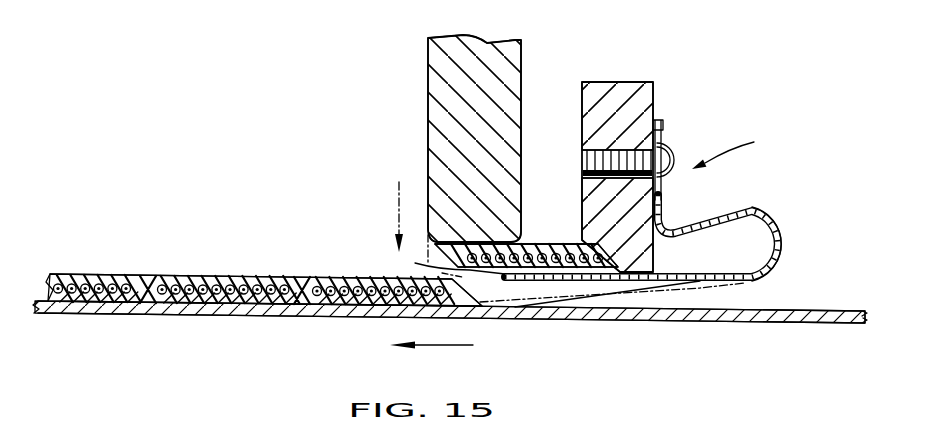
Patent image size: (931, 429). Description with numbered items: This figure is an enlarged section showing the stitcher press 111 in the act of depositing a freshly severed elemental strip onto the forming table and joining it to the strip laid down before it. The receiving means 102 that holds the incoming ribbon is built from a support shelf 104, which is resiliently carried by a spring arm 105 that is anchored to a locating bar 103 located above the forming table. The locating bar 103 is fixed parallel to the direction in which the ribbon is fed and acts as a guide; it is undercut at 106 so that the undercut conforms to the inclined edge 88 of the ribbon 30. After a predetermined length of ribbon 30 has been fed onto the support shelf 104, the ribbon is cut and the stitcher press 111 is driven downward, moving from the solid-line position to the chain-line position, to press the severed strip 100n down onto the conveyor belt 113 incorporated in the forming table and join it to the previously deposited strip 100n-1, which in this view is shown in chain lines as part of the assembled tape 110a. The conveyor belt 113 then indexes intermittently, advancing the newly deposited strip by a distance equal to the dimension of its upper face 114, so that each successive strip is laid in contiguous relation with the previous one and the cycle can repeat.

The stitcher press 111 is at (448, 132).
The locating bar 103 is at (632, 105).
The receiving means 102 is at (743, 150).
The inclined edge 88 is at (658, 212).
The upper face 114 is at (547, 252).
The undercut 106 is at (628, 266).
The spring arm 105 is at (786, 250).
The support shelf 104 is at (573, 272).
The conveyor belt 113 is at (685, 312).
The conductor tape 110a is at (85, 277).
The ribbon 30 is at (205, 277).
The preceding tape segment 100n-1 is at (320, 278).
The tape segment being bonded 100n is at (434, 252).